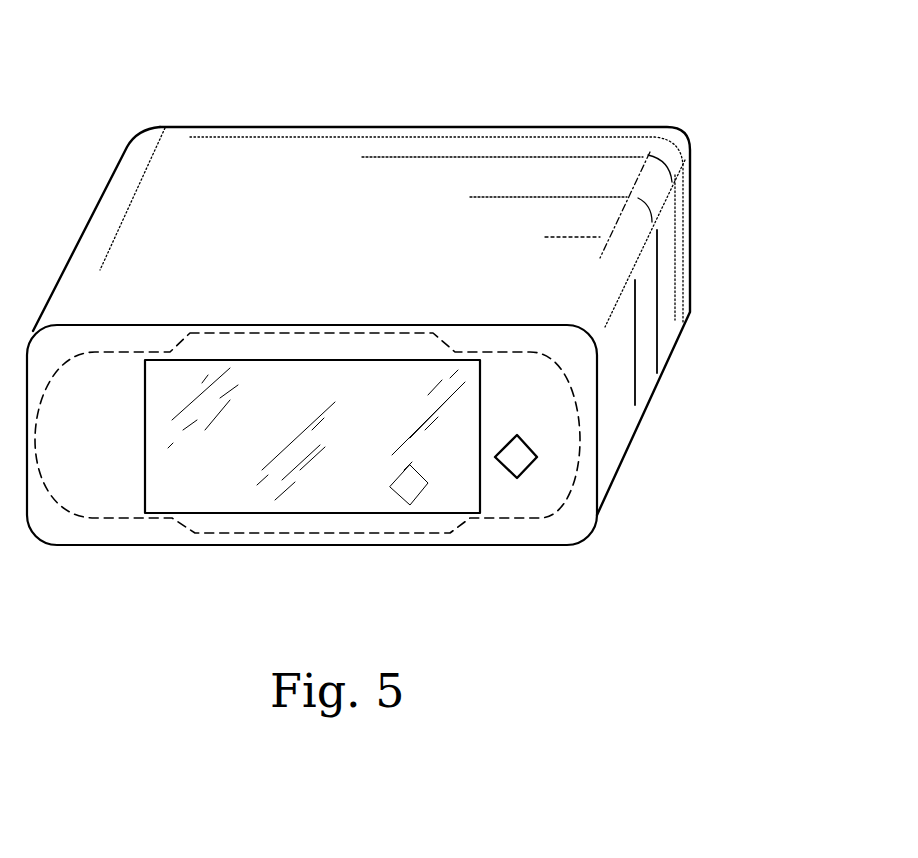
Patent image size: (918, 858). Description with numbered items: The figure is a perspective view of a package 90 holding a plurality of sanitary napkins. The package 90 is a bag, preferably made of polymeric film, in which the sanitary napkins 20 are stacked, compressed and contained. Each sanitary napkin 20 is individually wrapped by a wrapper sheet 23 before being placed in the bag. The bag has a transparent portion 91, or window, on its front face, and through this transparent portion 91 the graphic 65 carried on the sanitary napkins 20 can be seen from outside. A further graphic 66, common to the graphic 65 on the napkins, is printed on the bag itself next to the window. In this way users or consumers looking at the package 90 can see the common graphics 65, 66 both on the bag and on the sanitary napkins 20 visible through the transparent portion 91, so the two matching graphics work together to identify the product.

The package 90 is at (566, 98).
The transparent portion 91 is at (468, 380).
The graphic 66 is at (510, 457).
The graphic 65 is at (417, 490).
The sanitary napkin 20 is at (335, 493).
The wrapper sheet 23 is at (180, 497).